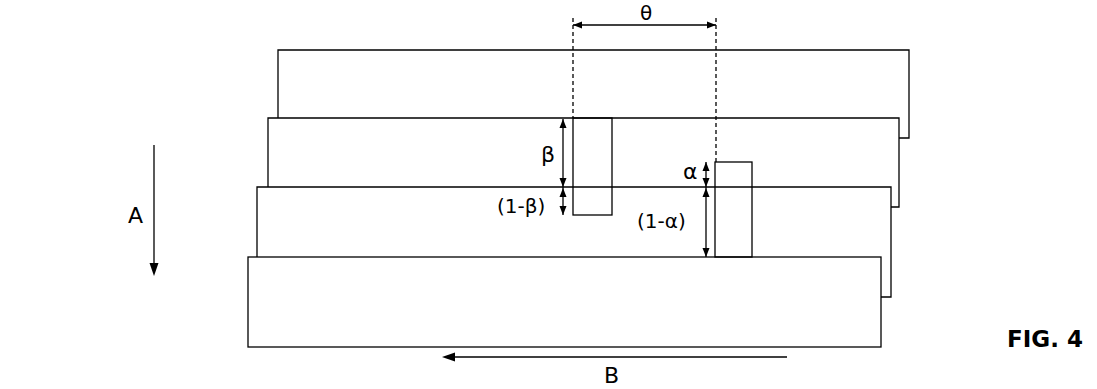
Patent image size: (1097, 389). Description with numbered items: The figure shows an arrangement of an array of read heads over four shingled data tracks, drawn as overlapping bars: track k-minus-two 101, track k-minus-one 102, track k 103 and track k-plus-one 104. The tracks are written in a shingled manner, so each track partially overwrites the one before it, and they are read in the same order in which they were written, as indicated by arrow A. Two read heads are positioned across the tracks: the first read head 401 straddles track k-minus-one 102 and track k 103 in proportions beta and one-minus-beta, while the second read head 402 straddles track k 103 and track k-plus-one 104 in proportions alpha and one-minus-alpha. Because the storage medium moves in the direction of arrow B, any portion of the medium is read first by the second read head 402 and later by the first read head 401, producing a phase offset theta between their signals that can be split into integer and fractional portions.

The track k-2 101 is at (278, 86).
The track k-1 102 is at (268, 153).
The track k 103 is at (257, 221).
The track k+1 104 is at (248, 301).
The read head H1 401 is at (592, 124).
The read head H2 402 is at (735, 168).